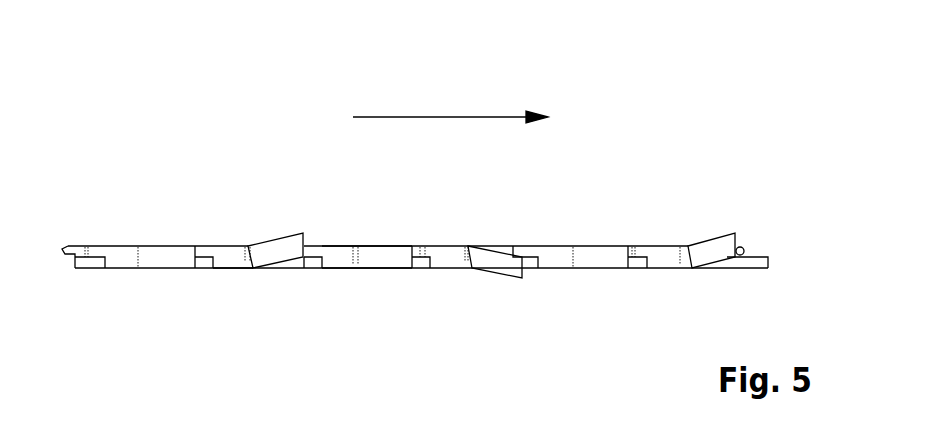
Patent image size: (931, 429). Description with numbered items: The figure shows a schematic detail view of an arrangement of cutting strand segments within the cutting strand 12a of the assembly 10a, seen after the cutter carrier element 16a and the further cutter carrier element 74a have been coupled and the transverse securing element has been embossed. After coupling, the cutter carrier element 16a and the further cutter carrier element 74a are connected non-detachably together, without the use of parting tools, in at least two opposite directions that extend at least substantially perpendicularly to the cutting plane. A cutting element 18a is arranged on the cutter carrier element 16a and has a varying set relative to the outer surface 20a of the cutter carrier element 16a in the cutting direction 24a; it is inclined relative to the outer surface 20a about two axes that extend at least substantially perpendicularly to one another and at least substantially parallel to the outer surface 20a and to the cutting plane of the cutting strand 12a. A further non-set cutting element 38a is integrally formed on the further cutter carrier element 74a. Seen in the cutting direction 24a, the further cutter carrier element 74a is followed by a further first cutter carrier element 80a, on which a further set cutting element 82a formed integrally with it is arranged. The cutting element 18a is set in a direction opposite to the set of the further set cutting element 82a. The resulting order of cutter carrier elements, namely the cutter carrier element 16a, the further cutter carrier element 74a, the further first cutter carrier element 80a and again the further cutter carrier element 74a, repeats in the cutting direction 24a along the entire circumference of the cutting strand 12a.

The rail 10a is at (292, 318).
The cutting strand 12a is at (742, 147).
The cutter carrier element 16a is at (225, 269).
The cutting element 18a is at (288, 250).
The outer surface 20a is at (238, 269).
The cutting direction 24a is at (455, 116).
The further non-set cutting element 38a is at (378, 253).
The further cutter carrier element 74a is at (338, 268).
The further first cutter carrier element 80a is at (443, 268).
The further set cutting element 82a is at (495, 258).